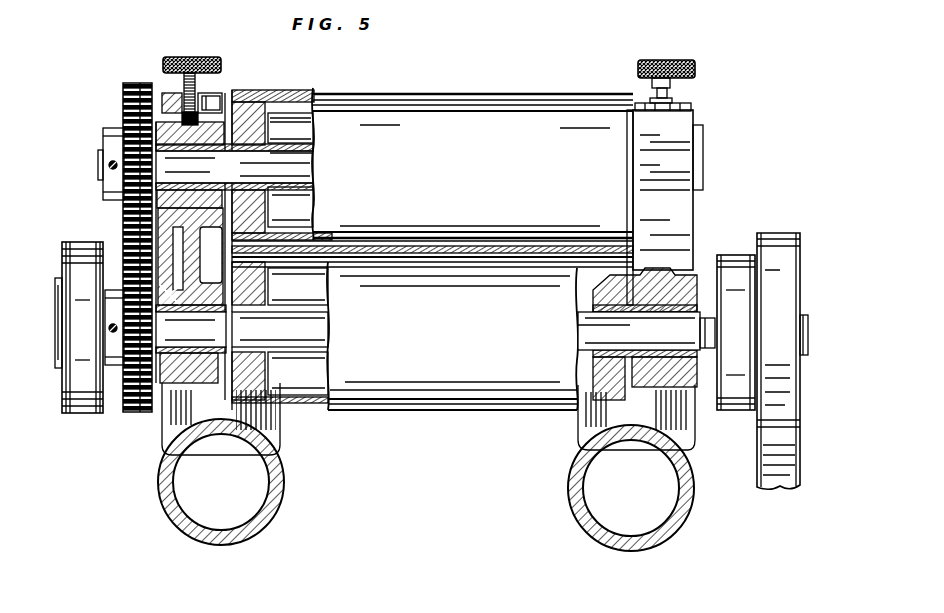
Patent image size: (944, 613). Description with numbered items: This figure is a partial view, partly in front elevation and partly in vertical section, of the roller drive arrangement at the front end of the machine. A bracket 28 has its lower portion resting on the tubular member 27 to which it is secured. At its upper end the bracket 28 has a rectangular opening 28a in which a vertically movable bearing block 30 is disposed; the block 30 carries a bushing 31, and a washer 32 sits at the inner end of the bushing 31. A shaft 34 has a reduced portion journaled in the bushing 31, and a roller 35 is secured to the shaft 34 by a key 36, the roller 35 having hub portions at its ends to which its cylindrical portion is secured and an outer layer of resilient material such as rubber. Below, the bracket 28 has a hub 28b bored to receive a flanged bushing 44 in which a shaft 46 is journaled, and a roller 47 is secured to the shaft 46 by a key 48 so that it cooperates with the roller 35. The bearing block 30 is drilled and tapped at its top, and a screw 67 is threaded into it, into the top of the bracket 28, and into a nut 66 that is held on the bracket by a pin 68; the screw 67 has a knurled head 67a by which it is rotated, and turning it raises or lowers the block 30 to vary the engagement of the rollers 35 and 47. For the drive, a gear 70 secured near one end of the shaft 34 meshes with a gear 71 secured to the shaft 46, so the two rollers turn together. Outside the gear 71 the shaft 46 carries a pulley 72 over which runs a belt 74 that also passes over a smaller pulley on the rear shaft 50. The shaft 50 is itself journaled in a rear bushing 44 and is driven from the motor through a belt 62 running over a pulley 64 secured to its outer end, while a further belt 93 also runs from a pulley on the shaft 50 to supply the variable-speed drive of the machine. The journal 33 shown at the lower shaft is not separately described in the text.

The member 27 is at (284, 488).
The bracket 28 is at (192, 250).
The rectangular opening 28a is at (248, 103).
The hub 28b is at (177, 400).
The bearing block 30 is at (303, 143).
The bushing 31 is at (125, 135).
The washer 32 is at (226, 186).
The lower shaft journal 33 is at (172, 320).
The shaft 34 is at (318, 135).
The roller 35 is at (508, 168).
The key 36 is at (316, 154).
The bushing 44 is at (228, 340).
The shaft 46 is at (320, 325).
The roller 47 is at (432, 335).
The key 48 is at (619, 330).
The shaft 50 is at (706, 357).
The belt 62 is at (790, 467).
The pulley 64 is at (801, 262).
The nut 66 is at (172, 94).
The screw 67 is at (207, 92).
The knurled head 67a is at (203, 48).
The pin 68 is at (214, 102).
The gear 70 is at (132, 82).
The gear 71 is at (121, 408).
The pulley 72 is at (60, 413).
The belt 74 is at (86, 242).
The belt 93 is at (740, 410).